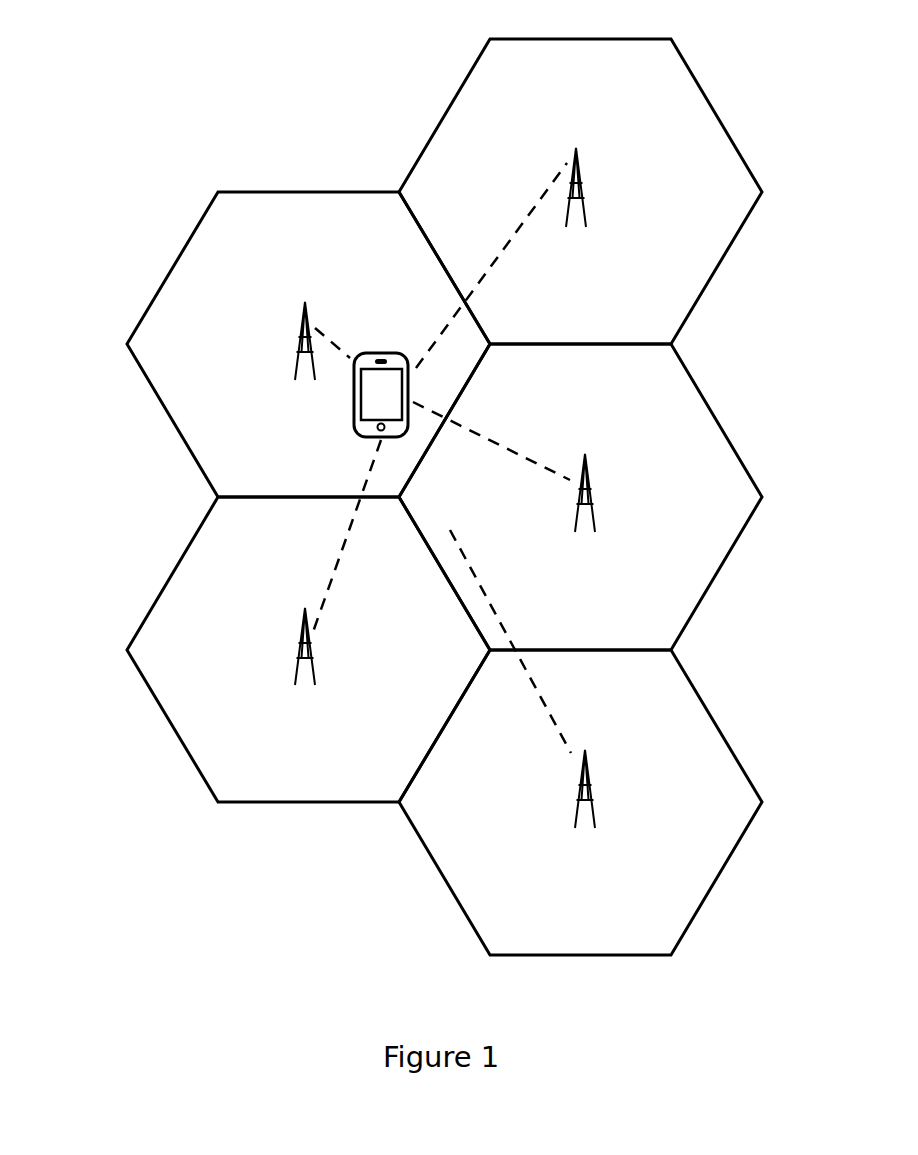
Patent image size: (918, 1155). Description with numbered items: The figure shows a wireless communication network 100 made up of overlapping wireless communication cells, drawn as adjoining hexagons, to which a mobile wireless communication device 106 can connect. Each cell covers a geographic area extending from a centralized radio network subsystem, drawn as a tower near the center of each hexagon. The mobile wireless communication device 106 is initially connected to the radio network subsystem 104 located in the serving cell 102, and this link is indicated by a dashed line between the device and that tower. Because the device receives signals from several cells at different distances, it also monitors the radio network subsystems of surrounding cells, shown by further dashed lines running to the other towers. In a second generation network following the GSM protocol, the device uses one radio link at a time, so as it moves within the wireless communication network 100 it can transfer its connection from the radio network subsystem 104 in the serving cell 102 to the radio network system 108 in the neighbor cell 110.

The wireless communication network 100 is at (112, 67).
The serving cell 102 is at (197, 219).
The radio network subsystem 104 is at (313, 317).
The mobile wireless communication device 106 is at (355, 393).
The radio network system 108 is at (596, 470).
The neighbor cell 110 is at (702, 393).